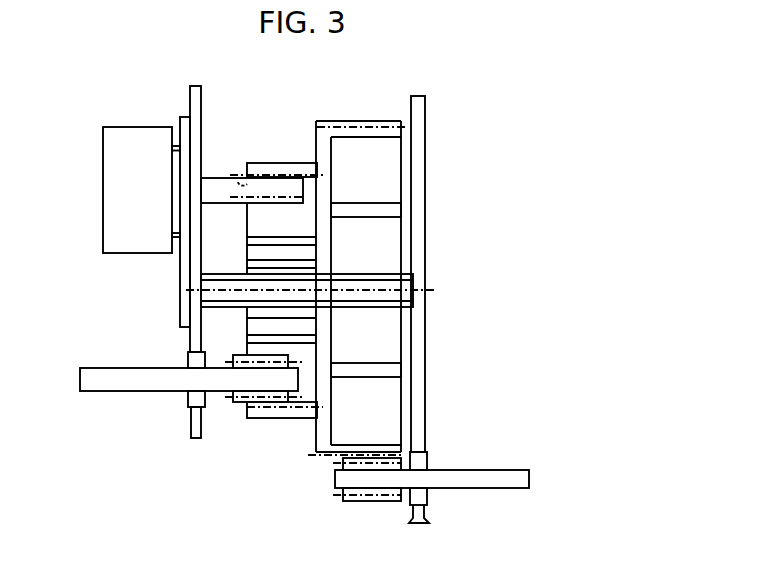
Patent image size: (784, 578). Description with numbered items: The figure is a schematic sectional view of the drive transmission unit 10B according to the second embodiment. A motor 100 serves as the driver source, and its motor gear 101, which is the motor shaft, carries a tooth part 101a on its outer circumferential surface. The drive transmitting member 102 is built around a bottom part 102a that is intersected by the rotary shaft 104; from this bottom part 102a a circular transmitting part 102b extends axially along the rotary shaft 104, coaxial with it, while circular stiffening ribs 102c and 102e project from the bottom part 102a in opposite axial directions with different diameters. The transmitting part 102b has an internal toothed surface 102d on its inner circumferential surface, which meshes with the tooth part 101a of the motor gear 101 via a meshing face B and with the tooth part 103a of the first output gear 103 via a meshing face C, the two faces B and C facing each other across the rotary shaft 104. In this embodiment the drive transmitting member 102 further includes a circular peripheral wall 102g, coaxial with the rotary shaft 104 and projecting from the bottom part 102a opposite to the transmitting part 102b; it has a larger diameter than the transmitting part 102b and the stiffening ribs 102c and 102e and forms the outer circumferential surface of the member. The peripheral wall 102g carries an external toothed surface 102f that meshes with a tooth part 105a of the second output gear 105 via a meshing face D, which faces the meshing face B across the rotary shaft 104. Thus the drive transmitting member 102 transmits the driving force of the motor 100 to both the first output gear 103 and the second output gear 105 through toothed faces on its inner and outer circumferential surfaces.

The drive transmission unit 10B is at (452, 96).
The motor 100 is at (133, 127).
The motor gear 101 is at (220, 199).
The tooth part 101a is at (242, 184).
The drive transmitting member 102 is at (301, 460).
The bottom part 102a is at (330, 148).
The transmitting part 102b is at (262, 167).
The stiffening rib 102c is at (367, 203).
The internal toothed surface 102d is at (300, 172).
The stiffening rib 102e is at (260, 338).
The external toothed surface 102f is at (386, 465).
The peripheral wall 102g is at (360, 450).
The first output gear 103 is at (138, 387).
The tooth part 103a is at (250, 393).
The rotary shaft 104 is at (380, 297).
The second output gear 105 is at (482, 481).
The tooth part 105a is at (384, 487).
The meshing face B is at (287, 173).
The meshing face C is at (282, 405).
The meshing face D is at (335, 473).